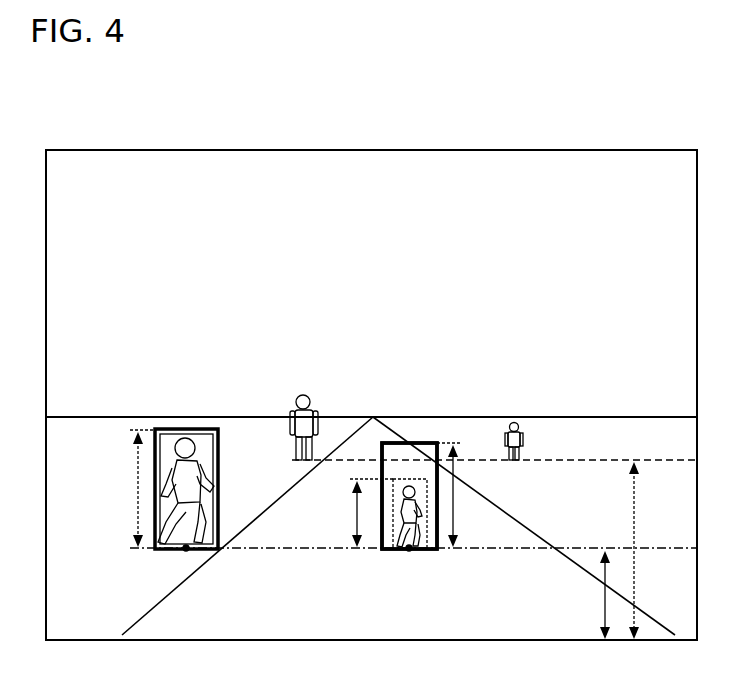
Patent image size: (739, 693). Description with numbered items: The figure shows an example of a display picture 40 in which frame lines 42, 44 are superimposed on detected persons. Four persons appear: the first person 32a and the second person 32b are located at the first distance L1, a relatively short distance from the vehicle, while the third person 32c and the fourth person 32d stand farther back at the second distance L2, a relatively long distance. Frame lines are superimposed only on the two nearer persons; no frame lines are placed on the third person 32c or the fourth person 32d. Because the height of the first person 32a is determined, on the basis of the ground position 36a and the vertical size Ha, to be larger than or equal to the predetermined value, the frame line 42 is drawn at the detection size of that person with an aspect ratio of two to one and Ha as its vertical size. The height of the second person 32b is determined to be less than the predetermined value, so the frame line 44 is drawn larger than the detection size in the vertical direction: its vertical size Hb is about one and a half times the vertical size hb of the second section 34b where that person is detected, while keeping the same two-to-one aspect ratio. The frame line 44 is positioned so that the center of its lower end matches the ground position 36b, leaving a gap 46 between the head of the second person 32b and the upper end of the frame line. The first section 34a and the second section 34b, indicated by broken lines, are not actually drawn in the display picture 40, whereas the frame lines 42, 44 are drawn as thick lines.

The display picture 40 is at (618, 128).
The frame line 42 is at (163, 428).
The first person 32a is at (186, 428).
The first section 34a is at (219, 462).
The ground position 36a is at (186, 551).
The second person 32b is at (410, 485).
The second section 34b is at (382, 538).
The ground position 36b is at (409, 551).
The frame line 44 is at (408, 478).
The gap 46 is at (392, 453).
The third person 32c is at (305, 394).
The fourth person 32d is at (514, 421).
The vertical size Ha is at (134, 494).
The vertical size hb is at (354, 513).
The vertical size Hb is at (456, 518).
The first distance L1 is at (600, 600).
The second distance L2 is at (637, 514).